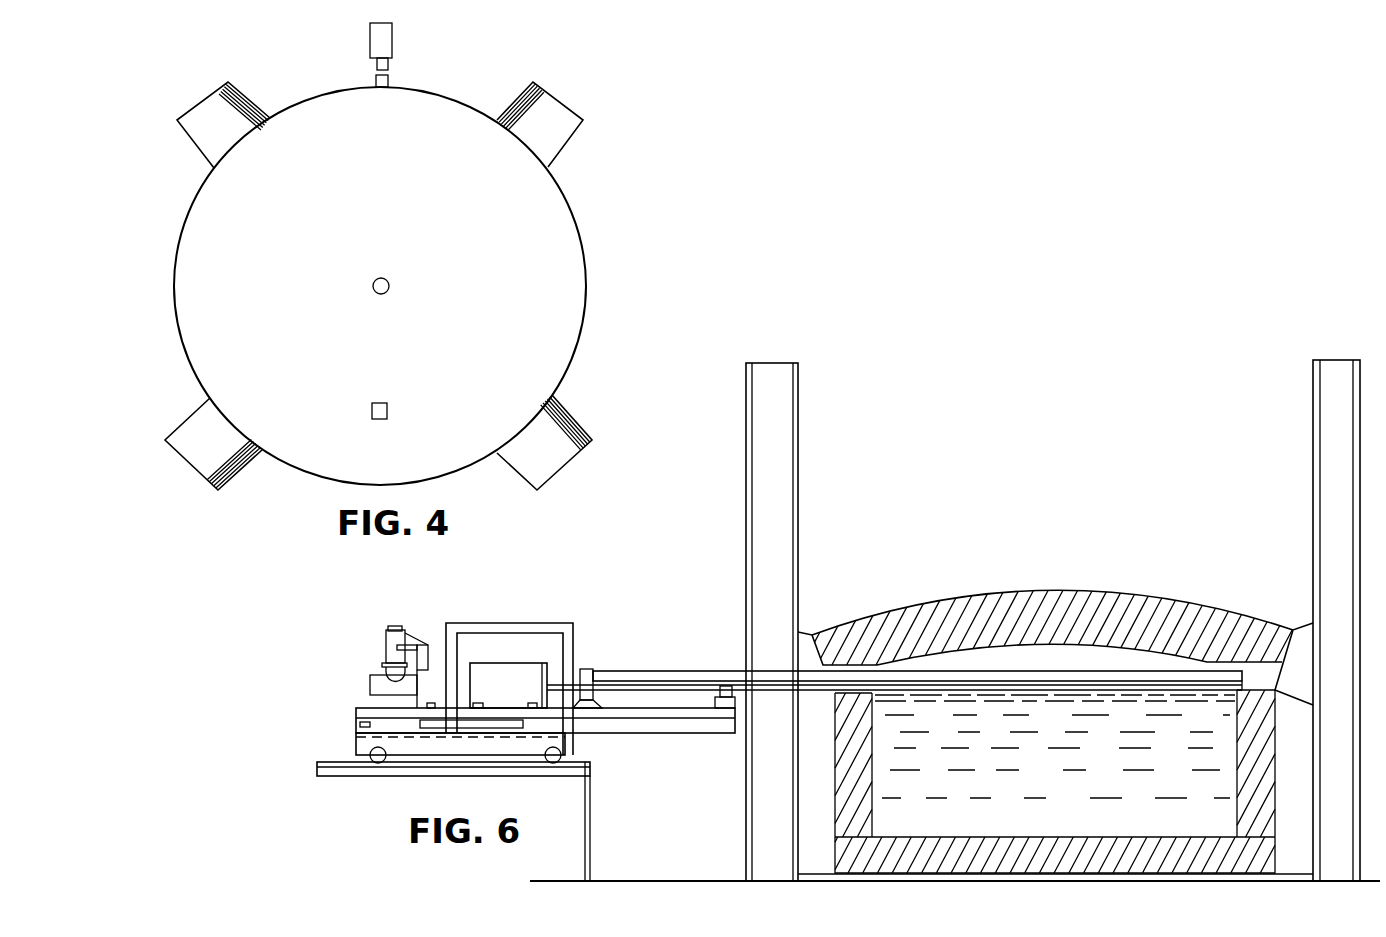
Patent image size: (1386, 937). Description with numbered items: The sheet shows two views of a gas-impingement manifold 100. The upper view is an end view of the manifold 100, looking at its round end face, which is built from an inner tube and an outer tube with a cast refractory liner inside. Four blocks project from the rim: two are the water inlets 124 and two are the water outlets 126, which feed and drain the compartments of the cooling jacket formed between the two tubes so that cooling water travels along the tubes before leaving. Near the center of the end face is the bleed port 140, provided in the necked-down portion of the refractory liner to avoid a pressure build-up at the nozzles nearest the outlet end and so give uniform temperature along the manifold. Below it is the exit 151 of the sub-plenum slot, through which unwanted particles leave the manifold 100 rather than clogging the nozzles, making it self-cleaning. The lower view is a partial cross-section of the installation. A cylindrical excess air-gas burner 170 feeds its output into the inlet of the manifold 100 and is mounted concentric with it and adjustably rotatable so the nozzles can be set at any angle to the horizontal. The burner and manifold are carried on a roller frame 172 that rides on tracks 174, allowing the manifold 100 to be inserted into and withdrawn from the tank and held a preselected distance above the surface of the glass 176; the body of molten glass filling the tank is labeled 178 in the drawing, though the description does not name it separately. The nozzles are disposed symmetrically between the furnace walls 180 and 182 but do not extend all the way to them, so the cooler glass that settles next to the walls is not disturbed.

In FIG. 4, the gas-impingement manifold 100 is at (465, 68).
In FIG. 6, the gas-impingement manifold 100 is at (640, 661).
In FIG. 4, the water inlets 124 is at (190, 421).
In FIG. 4, the water outlets 126 is at (188, 133).
In FIG. 4, the bleed port 140 is at (389, 286).
In FIG. 4, the exit 151 is at (387, 412).
In FIG. 6, the burner 170 is at (508, 692).
In FIG. 6, the roller frame 172 is at (356, 737).
In FIG. 6, the tracks 174 is at (317, 768).
In FIG. 6, the glass 176 is at (1082, 695).
In FIG. 6, the liquid 178 is at (1042, 778).
In FIG. 6, the furnace wall 180 is at (866, 780).
In FIG. 6, the furnace wall 182 is at (1240, 783).